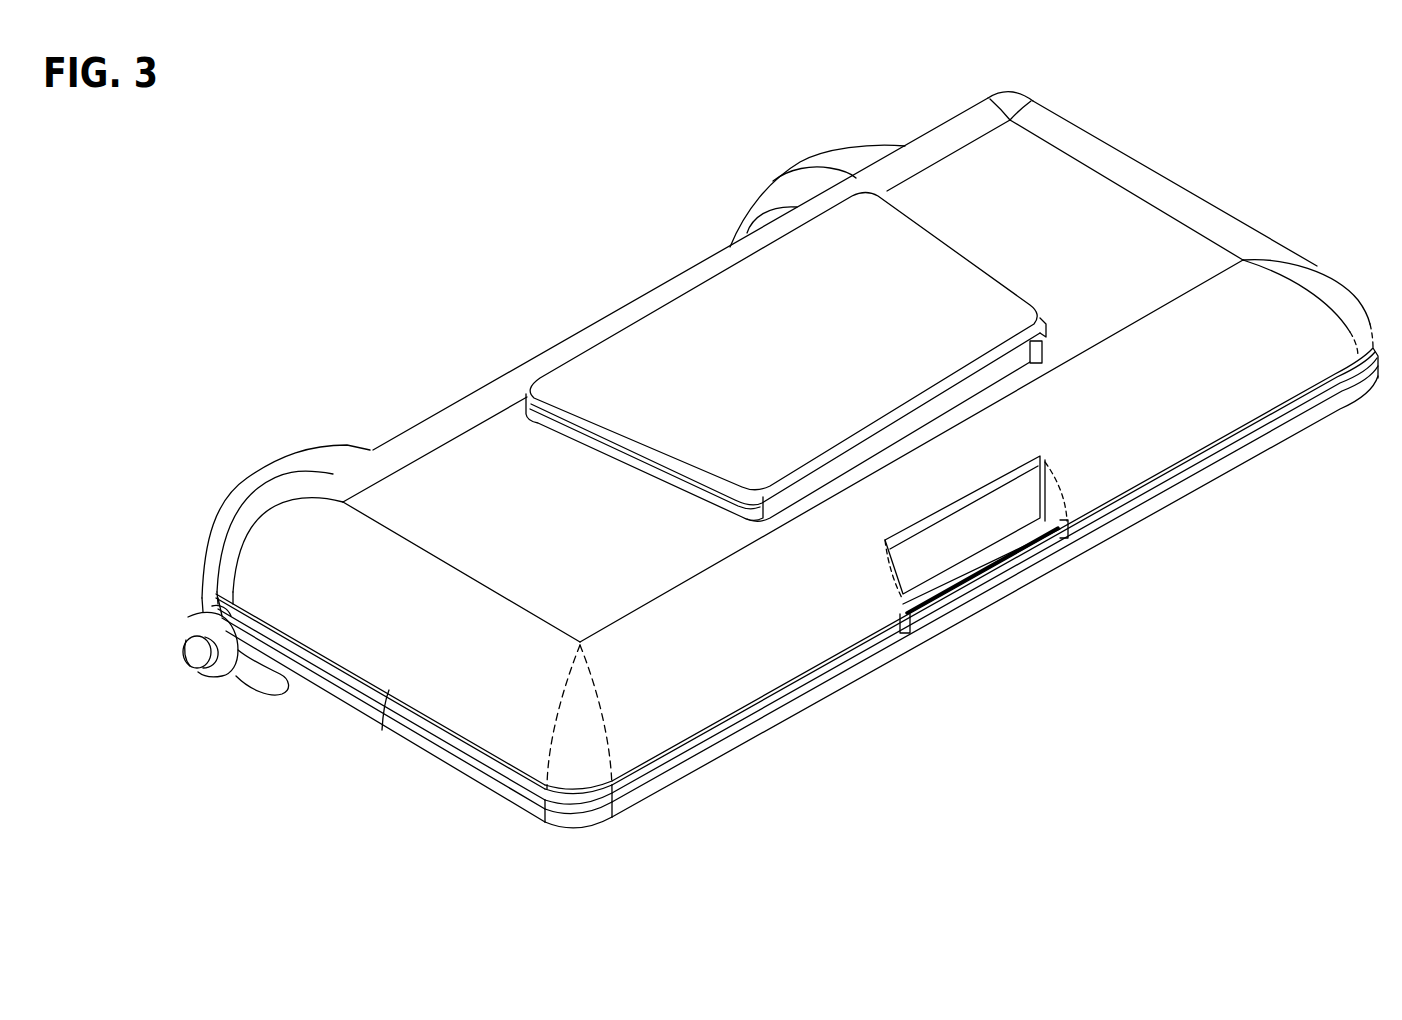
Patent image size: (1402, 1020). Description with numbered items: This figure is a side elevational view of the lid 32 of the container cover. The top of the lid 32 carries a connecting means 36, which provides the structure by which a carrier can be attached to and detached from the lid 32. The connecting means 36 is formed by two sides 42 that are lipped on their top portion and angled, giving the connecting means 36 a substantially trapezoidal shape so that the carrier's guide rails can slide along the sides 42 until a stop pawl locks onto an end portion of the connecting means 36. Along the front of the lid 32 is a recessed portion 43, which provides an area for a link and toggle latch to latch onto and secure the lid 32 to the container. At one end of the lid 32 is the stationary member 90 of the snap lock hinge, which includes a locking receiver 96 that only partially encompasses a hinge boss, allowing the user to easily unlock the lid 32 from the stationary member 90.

The lid 32 is at (1240, 154).
The connecting means 36 is at (818, 358).
The sides 42 is at (789, 357).
The recessed portion 43 is at (977, 577).
The stationary member 90 is at (230, 508).
The locking receiver 96 is at (195, 668).